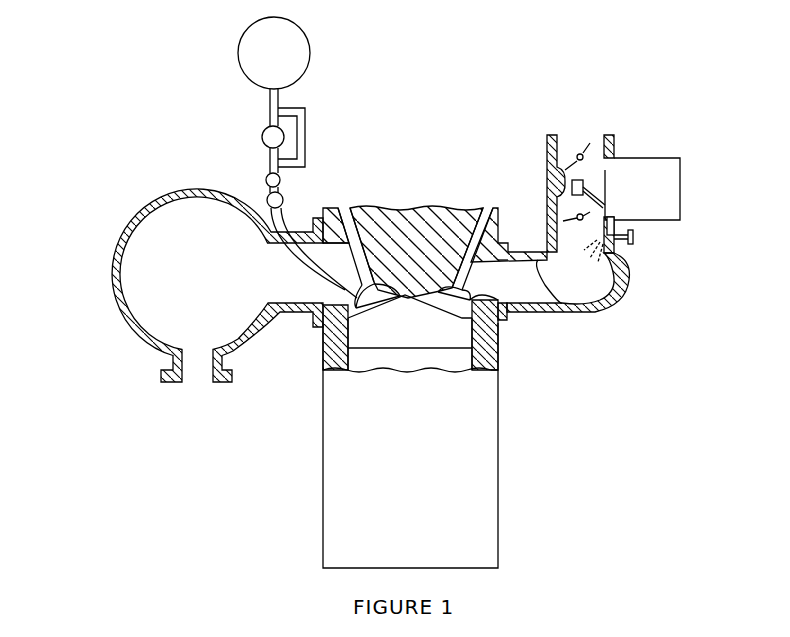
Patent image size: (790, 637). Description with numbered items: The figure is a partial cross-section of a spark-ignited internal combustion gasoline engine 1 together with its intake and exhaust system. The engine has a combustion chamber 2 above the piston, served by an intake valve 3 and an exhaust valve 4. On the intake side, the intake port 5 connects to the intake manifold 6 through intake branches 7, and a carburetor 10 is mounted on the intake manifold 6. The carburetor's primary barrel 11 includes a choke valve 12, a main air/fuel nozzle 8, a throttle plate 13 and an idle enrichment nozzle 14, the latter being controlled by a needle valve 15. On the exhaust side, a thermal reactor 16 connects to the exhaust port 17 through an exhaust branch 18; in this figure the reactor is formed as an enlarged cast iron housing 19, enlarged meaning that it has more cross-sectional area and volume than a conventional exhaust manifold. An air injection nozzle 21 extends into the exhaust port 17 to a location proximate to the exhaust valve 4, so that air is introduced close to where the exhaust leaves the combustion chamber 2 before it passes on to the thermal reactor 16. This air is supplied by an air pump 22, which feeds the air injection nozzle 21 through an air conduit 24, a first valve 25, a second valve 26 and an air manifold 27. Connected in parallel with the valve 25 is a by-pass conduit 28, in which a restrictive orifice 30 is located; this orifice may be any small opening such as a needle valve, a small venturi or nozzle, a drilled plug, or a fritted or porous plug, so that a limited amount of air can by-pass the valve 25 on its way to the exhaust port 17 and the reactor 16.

The internal combustion gasoline engine 1 is at (512, 447).
The combustion chamber 2 is at (410, 332).
The intake valve 3 is at (468, 254).
The exhaust valve 4 is at (362, 270).
The intake port 5 is at (497, 284).
The intake manifold 6 is at (605, 312).
The intake branches 7 is at (530, 292).
The main air/fuel nozzle 8 is at (577, 175).
The carburetor 10 is at (650, 123).
The primary barrel 11 is at (567, 135).
The choke valve 12 is at (585, 137).
The throttle plate 13 is at (563, 220).
The idle enrichment nozzle 14 is at (602, 233).
The needle valve 15 is at (635, 243).
The thermal reactor 16 is at (162, 193).
The exhaust port 17 is at (353, 300).
The exhaust branch 18 is at (302, 310).
The cast iron housing 19 is at (112, 292).
The air injection nozzle 21 is at (303, 262).
The air pump 22 is at (311, 46).
The air conduit 24 is at (268, 100).
The valve 25 is at (262, 133).
The valve 26 is at (266, 177).
The air manifold 27 is at (285, 197).
The by-pass conduit 28 is at (305, 108).
The restrictive orifice 30 is at (308, 137).